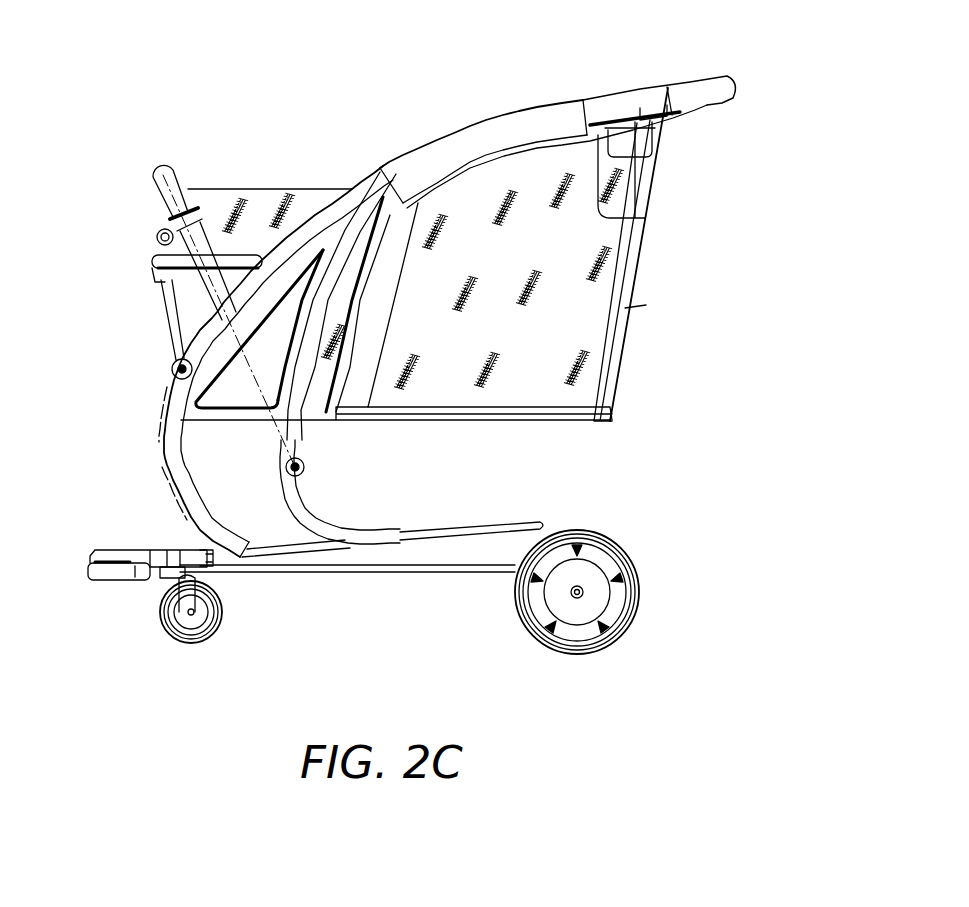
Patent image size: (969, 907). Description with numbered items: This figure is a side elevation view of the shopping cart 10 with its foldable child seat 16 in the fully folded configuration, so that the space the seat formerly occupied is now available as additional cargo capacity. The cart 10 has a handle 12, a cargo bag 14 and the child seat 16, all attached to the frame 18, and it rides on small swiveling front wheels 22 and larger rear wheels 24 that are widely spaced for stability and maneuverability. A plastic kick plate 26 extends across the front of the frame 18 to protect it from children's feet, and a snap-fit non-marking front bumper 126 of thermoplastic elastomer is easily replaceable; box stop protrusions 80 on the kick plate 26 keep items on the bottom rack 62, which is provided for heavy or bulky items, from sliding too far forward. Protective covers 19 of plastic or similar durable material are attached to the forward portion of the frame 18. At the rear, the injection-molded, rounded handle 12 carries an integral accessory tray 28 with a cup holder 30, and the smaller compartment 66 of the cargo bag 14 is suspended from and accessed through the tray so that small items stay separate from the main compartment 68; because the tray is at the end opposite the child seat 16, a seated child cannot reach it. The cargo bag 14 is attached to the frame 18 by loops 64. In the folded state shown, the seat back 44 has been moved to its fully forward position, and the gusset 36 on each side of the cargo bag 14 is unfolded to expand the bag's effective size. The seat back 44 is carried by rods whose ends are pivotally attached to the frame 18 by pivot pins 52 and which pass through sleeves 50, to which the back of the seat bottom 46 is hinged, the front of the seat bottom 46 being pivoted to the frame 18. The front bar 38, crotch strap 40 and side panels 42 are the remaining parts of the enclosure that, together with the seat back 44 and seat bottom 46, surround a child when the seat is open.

The shopping cart 10 is at (150, 82).
The handle 12 is at (735, 76).
The cargo bag 14 is at (565, 330).
The foldable child seat 16 is at (163, 327).
The frame 18 is at (170, 470).
The protective covers 19 is at (162, 447).
The front wheels 22 is at (225, 612).
The rear wheels 24 is at (515, 605).
The kick plate 26 is at (107, 549).
The accessory tray 28 is at (680, 112).
The cup holder 30 is at (640, 145).
The gussets 36 is at (272, 189).
The front bar 38 is at (155, 258).
The crotch strap 40 is at (160, 300).
The side panels 42 is at (221, 383).
The seat back 44 is at (170, 170).
The seat bottom 46 is at (182, 335).
The sleeves 50 is at (160, 229).
The pivot pins 52 is at (285, 467).
The bottom rack 62 is at (536, 523).
The loops 64 is at (479, 135).
The smaller compartment 66 is at (618, 196).
The main compartment 68 is at (565, 262).
The box stop protrusions 80 is at (186, 548).
The front bumper 126 is at (87, 570).